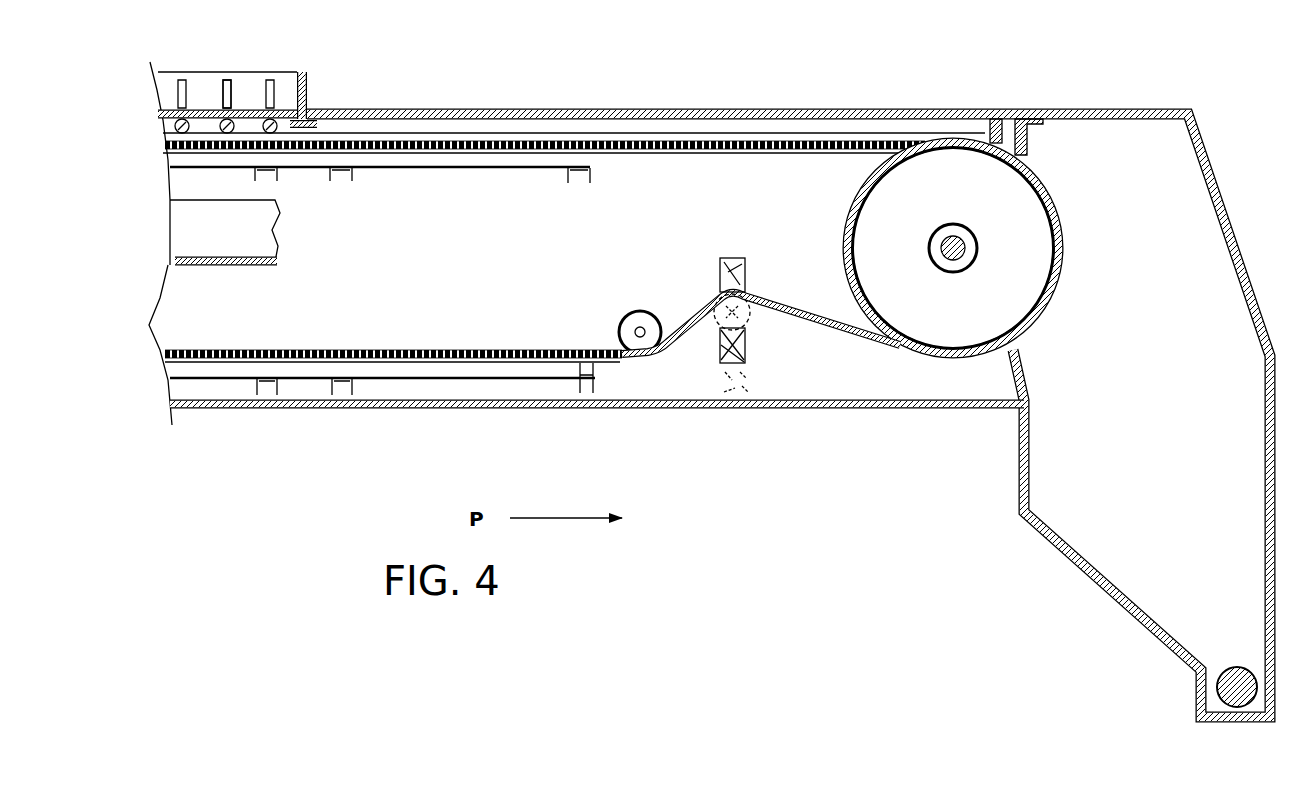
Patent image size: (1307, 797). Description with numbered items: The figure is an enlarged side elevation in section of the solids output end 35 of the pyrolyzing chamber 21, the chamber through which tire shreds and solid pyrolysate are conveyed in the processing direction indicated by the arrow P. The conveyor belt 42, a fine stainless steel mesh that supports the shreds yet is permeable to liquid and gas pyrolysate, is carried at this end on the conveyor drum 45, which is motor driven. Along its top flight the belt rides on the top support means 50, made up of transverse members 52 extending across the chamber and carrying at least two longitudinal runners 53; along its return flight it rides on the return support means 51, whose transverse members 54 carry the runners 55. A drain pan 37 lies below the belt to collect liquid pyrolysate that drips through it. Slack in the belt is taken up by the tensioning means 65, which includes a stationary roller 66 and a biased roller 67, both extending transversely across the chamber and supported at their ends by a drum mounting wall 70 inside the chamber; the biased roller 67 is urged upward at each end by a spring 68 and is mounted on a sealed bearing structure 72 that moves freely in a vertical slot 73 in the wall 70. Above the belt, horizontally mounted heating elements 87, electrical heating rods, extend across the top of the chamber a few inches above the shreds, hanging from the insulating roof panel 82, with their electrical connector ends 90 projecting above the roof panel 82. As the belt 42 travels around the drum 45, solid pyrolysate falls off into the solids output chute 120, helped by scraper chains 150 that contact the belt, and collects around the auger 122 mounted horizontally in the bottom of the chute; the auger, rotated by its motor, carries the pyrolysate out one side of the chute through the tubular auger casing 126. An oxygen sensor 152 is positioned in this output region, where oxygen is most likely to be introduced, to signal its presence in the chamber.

The pyrolyzing chamber 21 is at (590, 112).
The solids output end 35 is at (735, 90).
The drain pan 37 is at (248, 243).
The conveyor belt 42 is at (465, 140).
The conveyor drum 45 is at (870, 173).
The top support means 50 is at (437, 177).
The return support means 51 is at (428, 393).
The transverse members 52 is at (277, 176).
The longitudinal runners 53 is at (497, 158).
The transverse members 54 is at (338, 393).
The runners 55 is at (232, 373).
The tensioning means 65 is at (707, 368).
The stationary roller 66 is at (628, 318).
The biased roller 67 is at (705, 312).
The spring 68 is at (746, 346).
The drum mounting wall 70 is at (792, 191).
The sealed bearing structure 72 is at (745, 296).
The vertical slot 73 is at (727, 258).
The roof panel 82 is at (190, 100).
The heating elements 87 is at (238, 120).
The electrical connector ends 90 is at (273, 92).
The solids output chute 120 is at (1270, 409).
The auger 122 is at (1226, 687).
The auger casing 126 is at (1216, 107).
The scraper chains 150 is at (1043, 119).
The oxygen sensors 152 is at (1000, 118).